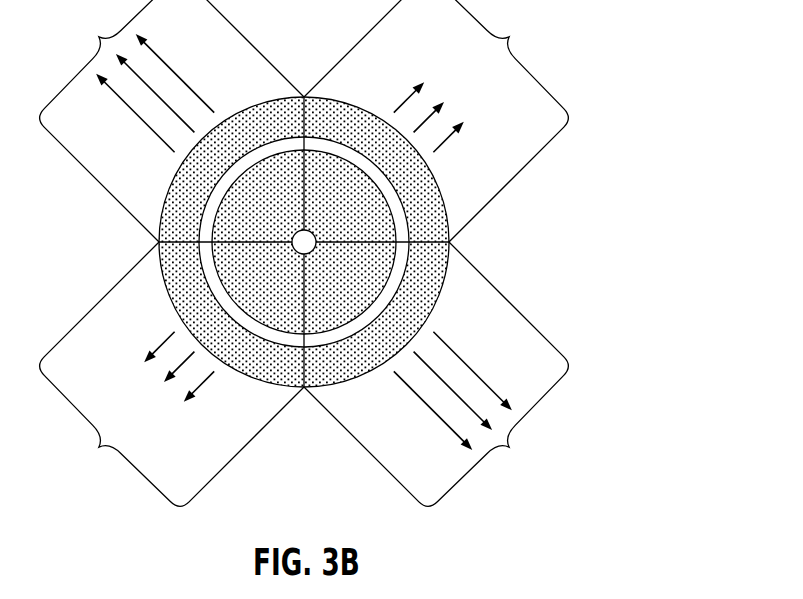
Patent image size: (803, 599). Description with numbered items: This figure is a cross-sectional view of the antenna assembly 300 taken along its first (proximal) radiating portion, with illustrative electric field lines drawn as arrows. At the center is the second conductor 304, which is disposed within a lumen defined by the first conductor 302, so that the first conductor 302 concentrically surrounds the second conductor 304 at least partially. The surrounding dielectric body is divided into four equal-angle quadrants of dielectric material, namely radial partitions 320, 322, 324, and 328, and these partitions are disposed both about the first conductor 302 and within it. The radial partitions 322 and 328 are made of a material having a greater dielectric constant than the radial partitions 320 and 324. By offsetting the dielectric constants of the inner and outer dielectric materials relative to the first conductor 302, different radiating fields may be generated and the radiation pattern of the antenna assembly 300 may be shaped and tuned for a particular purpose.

The antenna assembly 300 is at (352, 260).
The first conductor 302 is at (403, 283).
The second conductor 304 is at (313, 231).
The radial partition 320 is at (443, 121).
The radial partition 322 is at (443, 381).
The radial partition 324 is at (165, 381).
The radial partition 328 is at (165, 121).